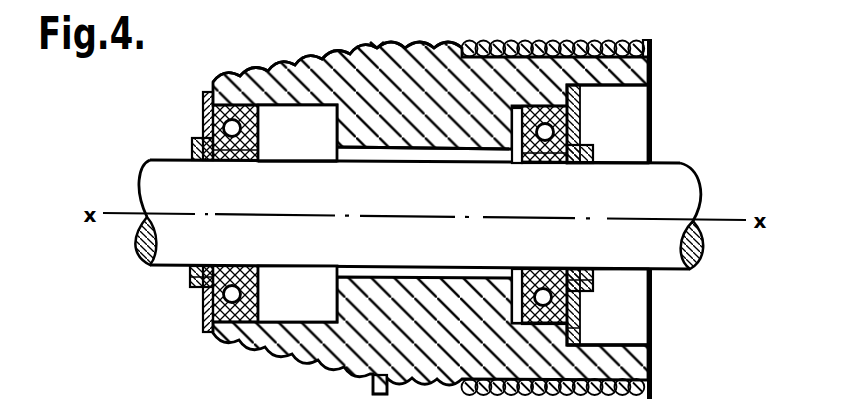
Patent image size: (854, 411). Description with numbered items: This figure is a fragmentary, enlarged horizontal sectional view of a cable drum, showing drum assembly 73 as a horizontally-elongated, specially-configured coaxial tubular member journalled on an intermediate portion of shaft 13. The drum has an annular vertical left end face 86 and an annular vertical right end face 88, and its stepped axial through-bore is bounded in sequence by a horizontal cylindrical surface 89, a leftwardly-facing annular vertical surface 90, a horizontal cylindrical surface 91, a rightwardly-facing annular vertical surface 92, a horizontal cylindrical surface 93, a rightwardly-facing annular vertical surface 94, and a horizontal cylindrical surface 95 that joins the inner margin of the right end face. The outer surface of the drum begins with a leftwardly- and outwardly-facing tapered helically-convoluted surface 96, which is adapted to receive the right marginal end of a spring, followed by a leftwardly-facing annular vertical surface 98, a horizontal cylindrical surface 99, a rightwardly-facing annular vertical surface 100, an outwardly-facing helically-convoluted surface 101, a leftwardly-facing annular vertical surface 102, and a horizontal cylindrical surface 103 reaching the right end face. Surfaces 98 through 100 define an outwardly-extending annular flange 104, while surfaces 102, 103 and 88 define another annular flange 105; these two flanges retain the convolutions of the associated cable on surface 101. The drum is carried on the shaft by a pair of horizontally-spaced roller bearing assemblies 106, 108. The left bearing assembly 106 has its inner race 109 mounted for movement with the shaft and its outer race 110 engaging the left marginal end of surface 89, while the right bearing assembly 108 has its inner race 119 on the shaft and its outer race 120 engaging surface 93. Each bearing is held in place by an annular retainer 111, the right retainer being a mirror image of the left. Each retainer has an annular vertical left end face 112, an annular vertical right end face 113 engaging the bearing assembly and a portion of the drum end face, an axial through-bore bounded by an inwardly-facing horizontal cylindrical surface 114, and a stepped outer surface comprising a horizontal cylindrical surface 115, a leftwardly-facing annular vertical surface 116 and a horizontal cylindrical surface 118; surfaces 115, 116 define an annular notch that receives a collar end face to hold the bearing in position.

The shaft 13 is at (704, 176).
The drum assembly 73 is at (658, 60).
The left end face 86 is at (208, 90).
The right end face 88 is at (653, 73).
The horizontal cylindrical surface 89 is at (273, 118).
The leftwardly-facing annular vertical surface 90 is at (337, 134).
The horizontal cylindrical surface 91 is at (392, 152).
The rightwardly-facing annular vertical surface 92 is at (512, 162).
The horizontal cylindrical surface 93 is at (518, 269).
The rightwardly-facing annular vertical surface 94 is at (576, 90).
The horizontal cylindrical surface 95 is at (645, 95).
The tapered helically-convoluted surface 96 is at (276, 70).
The leftwardly-facing annular vertical surface 98 is at (378, 47).
The horizontal cylindrical surface 99 is at (378, 46).
The rightwardly-facing annular vertical surface 100 is at (388, 46).
The helically-convoluted surface 101 is at (445, 47).
The leftwardly-facing annular vertical surface 102 is at (630, 47).
The horizontal cylindrical surface 103 is at (640, 44).
The annular flange 104 is at (373, 388).
The annular flange 105 is at (652, 392).
The left bearing assembly 106 is at (244, 166).
The right bearing assembly 108 is at (539, 171).
The inner race 109 is at (240, 266).
The outer race 110 is at (258, 302).
The retainer 111 is at (186, 277).
The left end face 112 is at (192, 146).
The right end face 113 is at (218, 160).
The inwardly-facing horizontal cylindrical surface 114 is at (198, 266).
The horizontal cylindrical surface 115 is at (203, 298).
The leftwardly-facing annular vertical surface 116 is at (203, 324).
The horizontal cylindrical surface 118 is at (207, 336).
The inner race 119 is at (533, 269).
The outer race 120 is at (580, 311).